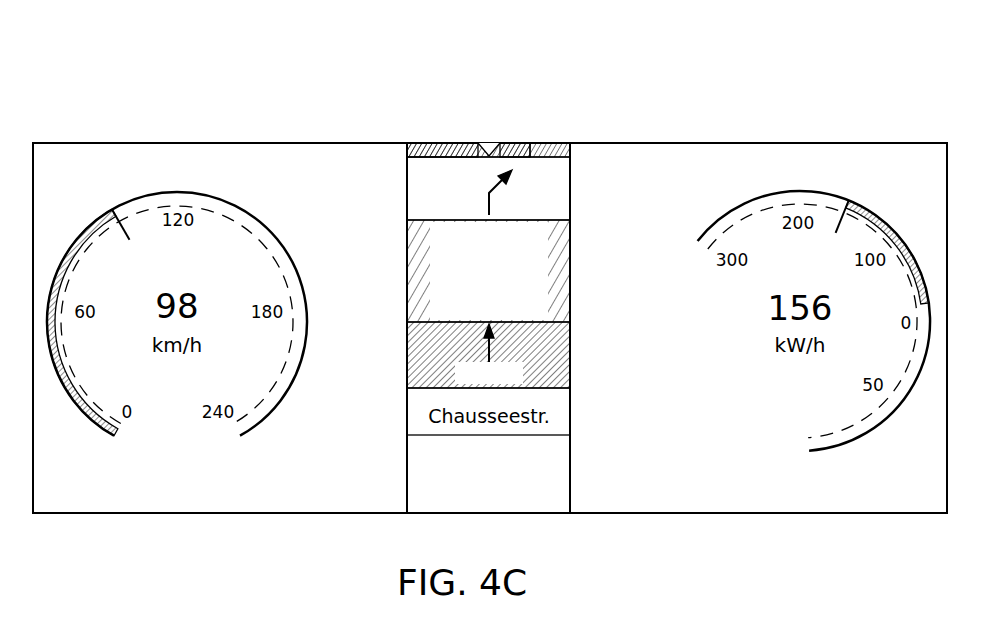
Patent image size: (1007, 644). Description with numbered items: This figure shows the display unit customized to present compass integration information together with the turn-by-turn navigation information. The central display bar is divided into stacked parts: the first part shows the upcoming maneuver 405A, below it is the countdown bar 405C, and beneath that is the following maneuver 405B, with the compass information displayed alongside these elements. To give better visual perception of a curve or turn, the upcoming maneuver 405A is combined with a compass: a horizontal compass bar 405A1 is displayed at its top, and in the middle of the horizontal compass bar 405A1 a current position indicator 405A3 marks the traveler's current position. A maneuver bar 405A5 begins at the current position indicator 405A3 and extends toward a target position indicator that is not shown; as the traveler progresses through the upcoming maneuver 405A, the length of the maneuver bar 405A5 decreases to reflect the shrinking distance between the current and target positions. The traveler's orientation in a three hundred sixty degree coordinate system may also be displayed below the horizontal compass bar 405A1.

The upcoming maneuver 405A is at (458, 132).
The horizontal compass bar 405A1 is at (427, 143).
The current position indicator 405A3 is at (489, 142).
The maneuver bar 405A5 is at (516, 142).
The following maneuver 405B is at (407, 346).
The countdown bar 405C is at (407, 261).